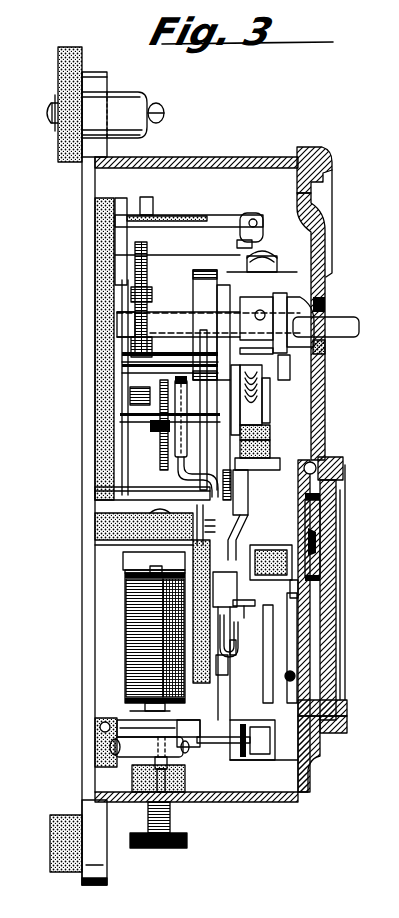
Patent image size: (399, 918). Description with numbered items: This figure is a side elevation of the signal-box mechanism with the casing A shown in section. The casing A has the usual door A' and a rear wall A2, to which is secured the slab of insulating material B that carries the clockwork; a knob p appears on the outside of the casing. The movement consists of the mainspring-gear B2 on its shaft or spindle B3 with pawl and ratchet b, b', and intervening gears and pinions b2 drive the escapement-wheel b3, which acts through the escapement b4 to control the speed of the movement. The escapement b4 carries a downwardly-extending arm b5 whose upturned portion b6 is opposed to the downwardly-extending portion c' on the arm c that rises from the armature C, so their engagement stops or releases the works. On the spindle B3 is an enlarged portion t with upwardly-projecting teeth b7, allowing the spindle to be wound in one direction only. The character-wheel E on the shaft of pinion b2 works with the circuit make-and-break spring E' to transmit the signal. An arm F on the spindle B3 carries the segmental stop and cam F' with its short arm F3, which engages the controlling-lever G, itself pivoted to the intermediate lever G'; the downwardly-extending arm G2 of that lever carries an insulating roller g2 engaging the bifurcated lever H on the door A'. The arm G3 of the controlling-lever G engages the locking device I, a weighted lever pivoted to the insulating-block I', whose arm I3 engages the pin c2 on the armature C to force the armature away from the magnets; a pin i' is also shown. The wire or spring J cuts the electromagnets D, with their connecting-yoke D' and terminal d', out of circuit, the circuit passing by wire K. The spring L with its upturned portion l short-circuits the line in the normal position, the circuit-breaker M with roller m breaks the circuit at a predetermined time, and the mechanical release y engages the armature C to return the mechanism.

The casing A is at (191, 466).
The door A' is at (322, 609).
The rear wall A2 is at (97, 662).
The knob / thumb screw p is at (50, 126).
The circuit-breaker M is at (206, 240).
The roller m is at (268, 253).
The slab of insulating material B is at (95, 247).
The mainspring-gear B2 is at (138, 265).
The shaft or spindle B3 is at (290, 357).
The pawl b is at (154, 298).
The ratchet b' is at (147, 322).
The intervening gears and pinions b2 is at (161, 443).
The escapement-wheel b3 is at (184, 381).
The escapement b4 is at (187, 447).
The downwardly-extending arm b5 is at (137, 620).
The upturned portion b6 is at (232, 648).
The upwardly-projecting teeth b7 is at (326, 313).
The character-wheel E is at (256, 321).
The circuit make-and-break spring E' is at (292, 400).
The enlarged portion t is at (286, 303).
The arm F is at (296, 395).
The segmental stop and cam F' is at (316, 395).
The short arm F3 is at (283, 467).
The spring L is at (313, 468).
The upturned portion l is at (213, 466).
The controlling-lever G is at (253, 515).
The intermediate lever G' is at (138, 513).
The downwardly-extending arm G2 is at (313, 497).
The arm G3 is at (250, 588).
The roller g2 is at (313, 543).
The wire or spring J is at (327, 517).
The lever H is at (318, 553).
The wire K is at (207, 535).
The electromagnets D is at (142, 638).
The connecting-yoke D' is at (144, 558).
The coil terminal d' is at (135, 701).
The locking device I is at (153, 646).
The insulating-block I' is at (128, 600).
The arm I3 is at (164, 712).
The pin i' is at (246, 615).
The arm c is at (244, 654).
The downwardly-extending portion c' is at (243, 636).
The pin c2 is at (264, 740).
The armature C is at (180, 730).
The mechanical release y is at (170, 818).